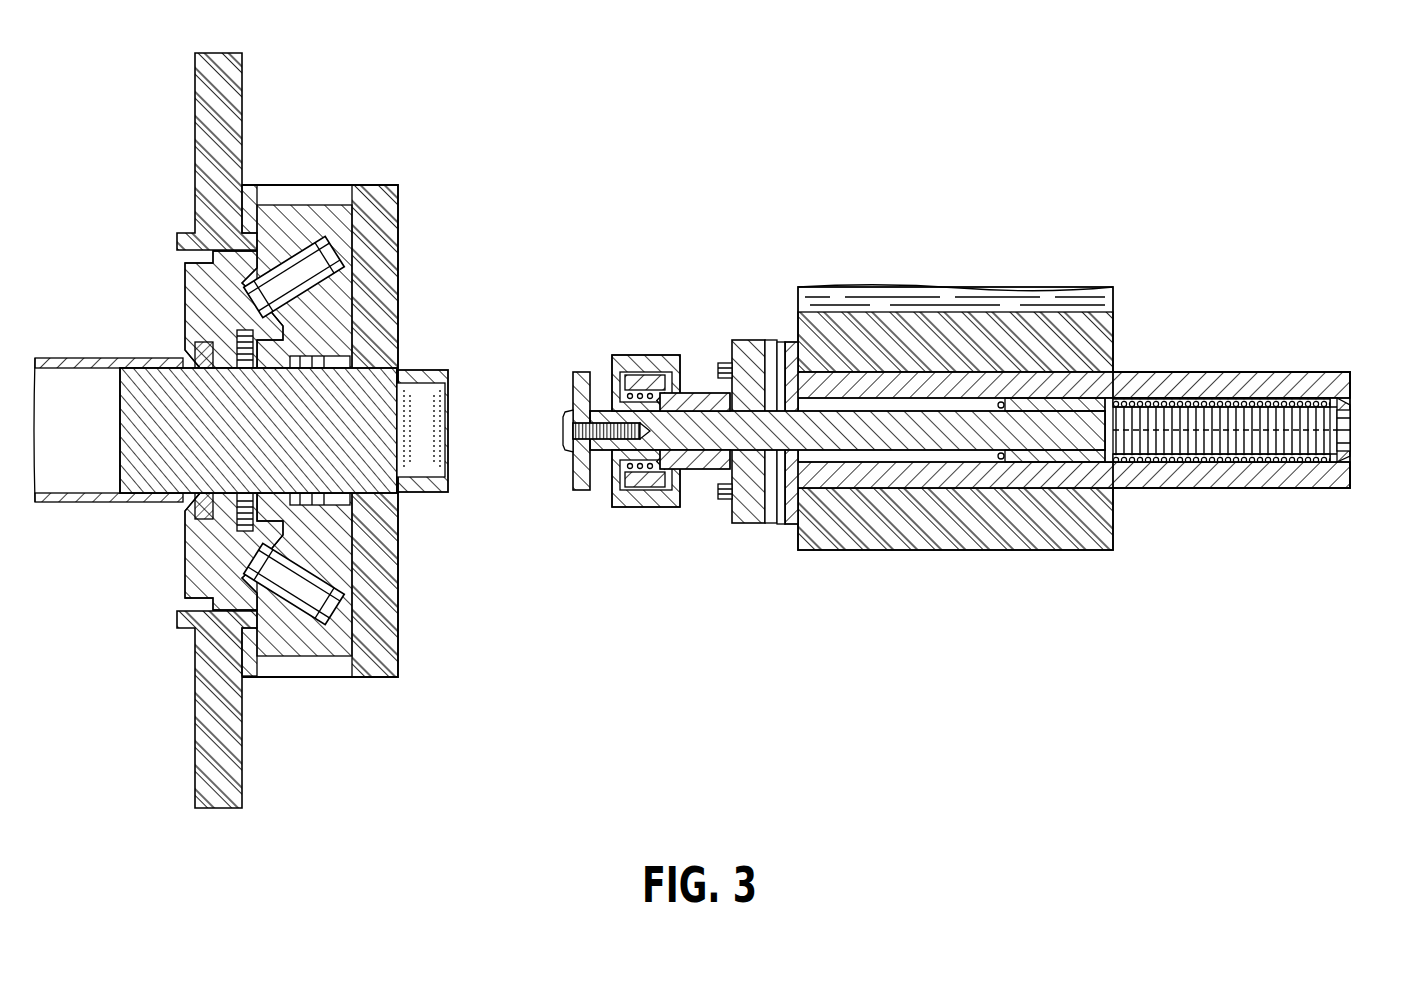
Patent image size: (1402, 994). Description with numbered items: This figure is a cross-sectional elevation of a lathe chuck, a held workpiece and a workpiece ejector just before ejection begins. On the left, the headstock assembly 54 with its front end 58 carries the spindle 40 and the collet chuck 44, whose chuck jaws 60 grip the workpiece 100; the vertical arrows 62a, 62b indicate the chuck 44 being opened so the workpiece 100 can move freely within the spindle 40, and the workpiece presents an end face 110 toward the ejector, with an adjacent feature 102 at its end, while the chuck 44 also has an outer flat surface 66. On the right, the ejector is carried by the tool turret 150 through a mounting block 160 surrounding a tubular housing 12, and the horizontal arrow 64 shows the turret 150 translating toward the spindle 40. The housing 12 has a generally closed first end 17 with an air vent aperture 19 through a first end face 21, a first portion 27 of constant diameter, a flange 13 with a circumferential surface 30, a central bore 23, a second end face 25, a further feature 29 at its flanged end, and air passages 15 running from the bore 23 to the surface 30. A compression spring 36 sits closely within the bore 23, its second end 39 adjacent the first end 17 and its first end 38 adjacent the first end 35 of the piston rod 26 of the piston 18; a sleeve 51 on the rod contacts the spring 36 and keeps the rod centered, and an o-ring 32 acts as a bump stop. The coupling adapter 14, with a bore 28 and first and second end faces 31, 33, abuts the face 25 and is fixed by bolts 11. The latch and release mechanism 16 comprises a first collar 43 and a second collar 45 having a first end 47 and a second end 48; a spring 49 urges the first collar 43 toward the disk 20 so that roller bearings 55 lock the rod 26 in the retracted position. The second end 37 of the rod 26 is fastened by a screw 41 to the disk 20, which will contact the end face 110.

The headstock assembly 54 is at (243, 66).
The front end 58 is at (242, 421).
The vertical arrow 62a is at (305, 195).
The vertical arrow 62b is at (305, 665).
The chuck 44 is at (314, 407).
The outer flat surface 66 is at (398, 262).
The workpiece 100 is at (408, 367).
The end face 110 is at (447, 372).
The coupling bore 102 is at (430, 494).
The chuck jaws 60 is at (316, 492).
The spindle 40 is at (60, 505).
The horizontal arrow 64 is at (553, 432).
The disk 20 is at (575, 382).
The screw 41 is at (565, 440).
The second end 37 is at (600, 455).
The second end 48 is at (658, 434).
The second collar 45 is at (628, 376).
The first collar 43 is at (650, 378).
The first end 47 is at (688, 392).
The spring 49 is at (628, 510).
The roller bearings 55 is at (661, 482).
The latch and release mechanism 16 is at (640, 543).
The bolts 11 is at (720, 370).
The second end face 33 is at (742, 340).
The second end face 25 is at (774, 342).
The air passages 15 is at (786, 342).
The bore 28 is at (746, 524).
The coupling adapter 14 is at (733, 522).
The first end face 31 is at (771, 525).
The circumferential surface 30 is at (781, 526).
The sleeve flange 29 is at (795, 508).
The piston rod 26 is at (1086, 467).
The piston 18 is at (922, 452).
The mounting block 160 is at (988, 551).
The flange 13 is at (806, 358).
The bore 23 is at (843, 425).
The tool turret 150 is at (958, 285).
The o-ring 32 is at (1003, 402).
The sleeve 51 is at (1048, 400).
The first end 35 is at (1112, 488).
The first end 38 is at (1108, 400).
The compression spring 36 is at (1205, 430).
The housing 12 is at (1265, 371).
The second end 39 is at (1335, 405).
The first end face 21 is at (1352, 385).
The air vent aperture 19 is at (1352, 432).
The first portion 27 is at (1218, 489).
The first end 17 is at (1341, 489).